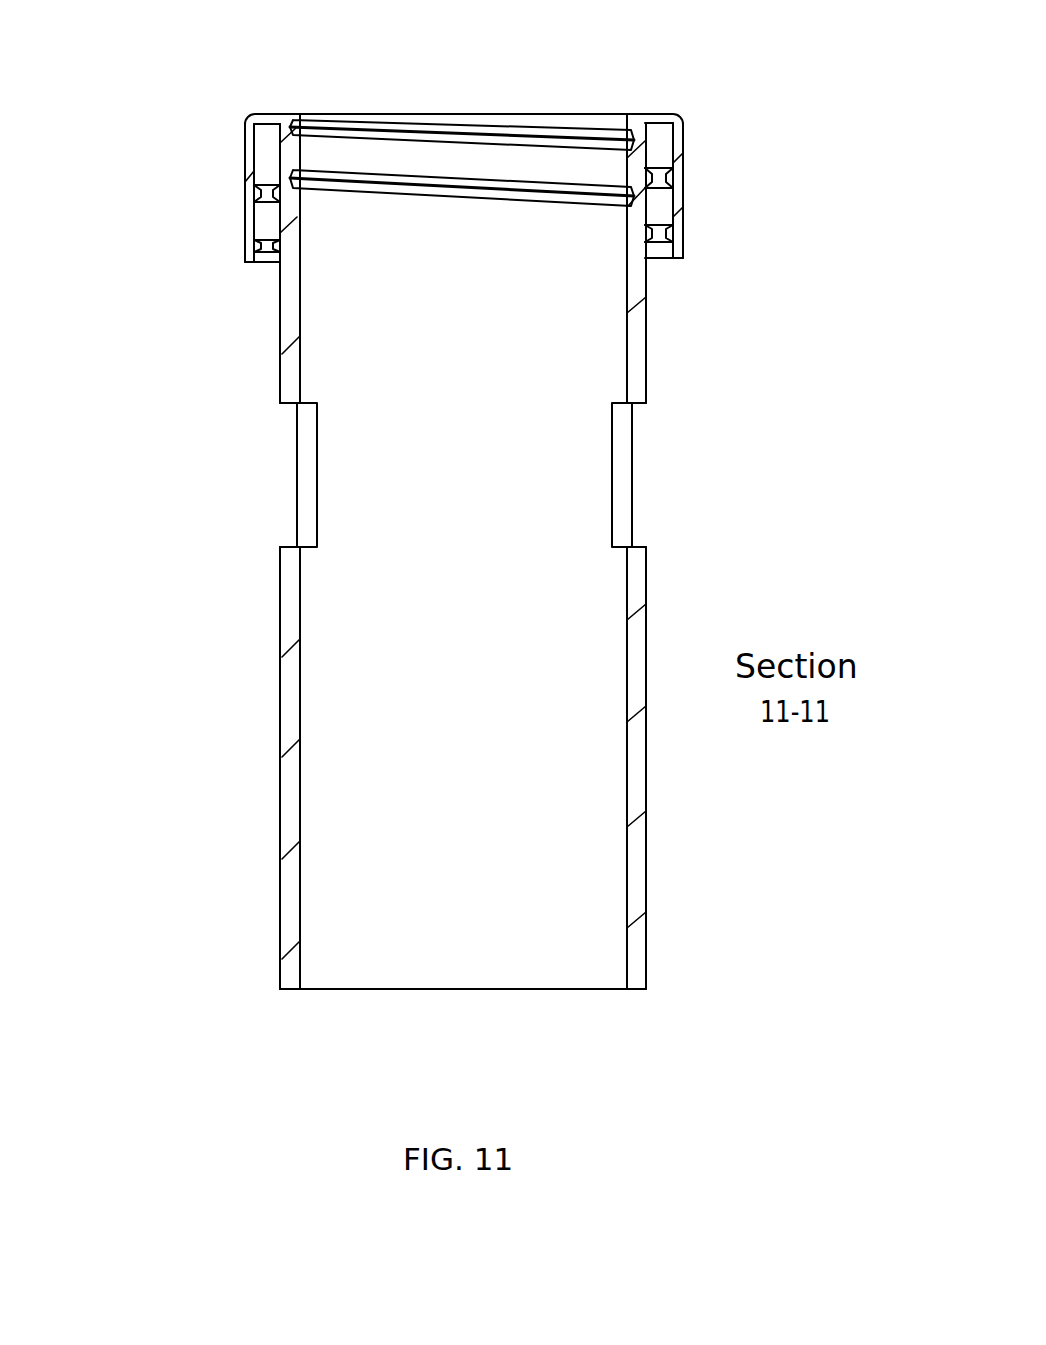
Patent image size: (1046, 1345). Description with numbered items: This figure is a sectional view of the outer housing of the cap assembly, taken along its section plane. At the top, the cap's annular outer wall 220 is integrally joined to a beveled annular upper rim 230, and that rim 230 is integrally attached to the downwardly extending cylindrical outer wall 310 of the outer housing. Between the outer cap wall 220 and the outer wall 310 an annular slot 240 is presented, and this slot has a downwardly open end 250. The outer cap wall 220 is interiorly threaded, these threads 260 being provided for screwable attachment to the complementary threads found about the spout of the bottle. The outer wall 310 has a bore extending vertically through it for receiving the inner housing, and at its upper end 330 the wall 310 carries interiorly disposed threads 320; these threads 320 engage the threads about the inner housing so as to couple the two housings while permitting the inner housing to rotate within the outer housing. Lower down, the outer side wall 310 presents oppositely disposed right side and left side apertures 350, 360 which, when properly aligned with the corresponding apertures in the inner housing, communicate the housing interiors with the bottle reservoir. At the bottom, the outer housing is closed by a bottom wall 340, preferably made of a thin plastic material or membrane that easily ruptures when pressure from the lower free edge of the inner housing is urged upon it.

The annular outer wall 220 is at (683, 143).
The beveled annular upper rim 230 is at (644, 113).
The upper end 330 is at (538, 121).
The annular slot 240 is at (655, 253).
The threads 260 is at (255, 252).
The downwardly open end 250 is at (272, 258).
The threads 320 is at (468, 188).
The outer wall 310 is at (635, 345).
The left side aperture 360 is at (297, 480).
The right side aperture 350 is at (632, 510).
The bottom wall 340 is at (508, 989).